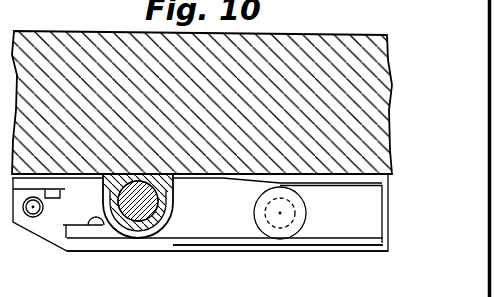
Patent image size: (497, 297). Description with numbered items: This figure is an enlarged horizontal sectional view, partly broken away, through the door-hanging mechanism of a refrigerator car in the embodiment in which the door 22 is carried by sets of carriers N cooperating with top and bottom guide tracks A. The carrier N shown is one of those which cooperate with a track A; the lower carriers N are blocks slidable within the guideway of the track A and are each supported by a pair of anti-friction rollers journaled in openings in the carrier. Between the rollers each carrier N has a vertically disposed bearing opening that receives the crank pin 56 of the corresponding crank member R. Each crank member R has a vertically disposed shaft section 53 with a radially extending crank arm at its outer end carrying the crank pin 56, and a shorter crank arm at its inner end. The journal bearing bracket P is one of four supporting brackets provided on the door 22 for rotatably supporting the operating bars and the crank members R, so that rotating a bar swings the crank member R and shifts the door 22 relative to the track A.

The door 22 is at (314, 36).
The shaft section 53 is at (141, 222).
The crank pin 56 is at (268, 222).
The journal bearing bracket P is at (173, 198).
The crank member R is at (300, 239).
The carrier N is at (340, 245).
The guide track A is at (376, 250).